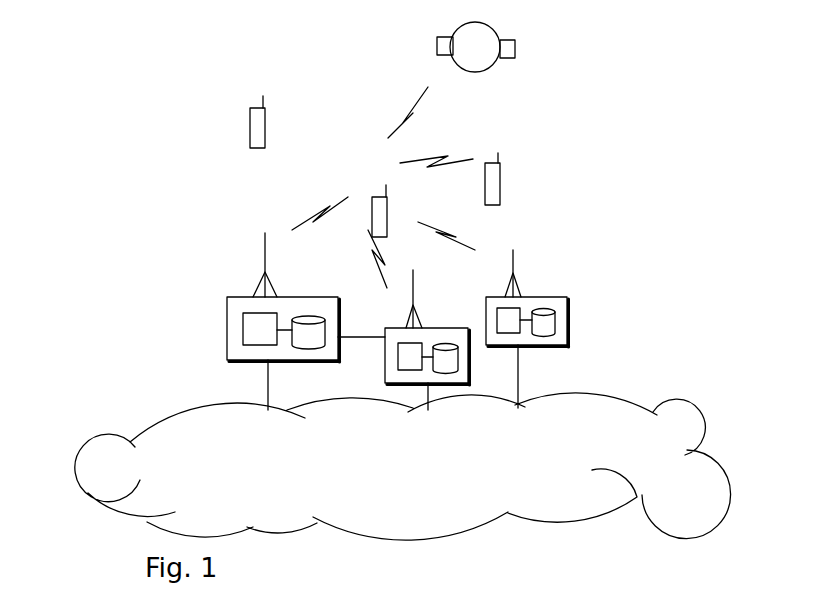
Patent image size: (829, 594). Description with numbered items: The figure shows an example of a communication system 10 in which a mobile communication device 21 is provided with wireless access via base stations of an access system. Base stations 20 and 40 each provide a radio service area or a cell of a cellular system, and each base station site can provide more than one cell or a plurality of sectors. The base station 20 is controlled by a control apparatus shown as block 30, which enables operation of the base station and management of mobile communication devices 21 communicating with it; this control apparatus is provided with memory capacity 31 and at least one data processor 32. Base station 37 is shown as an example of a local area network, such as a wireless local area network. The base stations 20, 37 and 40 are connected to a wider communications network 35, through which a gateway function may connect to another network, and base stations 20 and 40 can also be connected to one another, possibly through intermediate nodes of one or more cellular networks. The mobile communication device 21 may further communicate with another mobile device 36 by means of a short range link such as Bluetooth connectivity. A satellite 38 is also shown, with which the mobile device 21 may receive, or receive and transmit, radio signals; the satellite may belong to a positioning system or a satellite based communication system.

The communication system 10 is at (110, 101).
The base station 20 is at (265, 259).
The mobile communication device 21 is at (382, 208).
The control apparatus 30 is at (227, 306).
The memory capacity 31 is at (308, 338).
The data processor 32 is at (252, 322).
The communications network 35 is at (127, 442).
The mobile device 36 is at (490, 175).
The base station 37 is at (570, 320).
The satellite 38 is at (487, 33).
The base station 40 is at (470, 372).